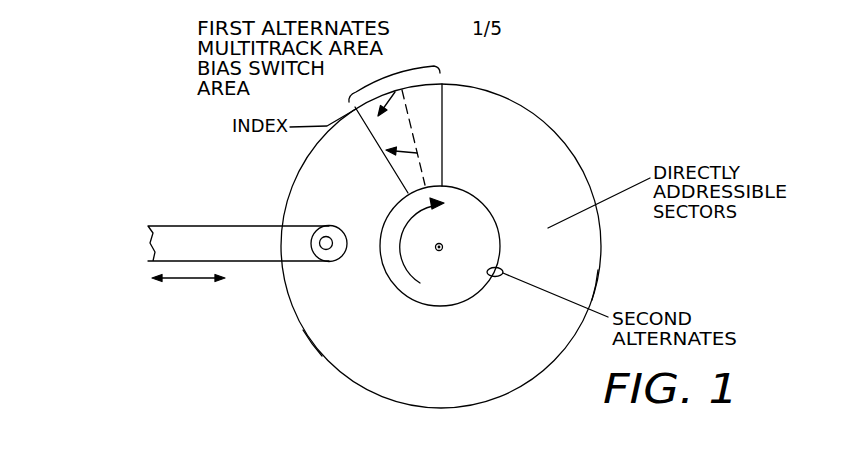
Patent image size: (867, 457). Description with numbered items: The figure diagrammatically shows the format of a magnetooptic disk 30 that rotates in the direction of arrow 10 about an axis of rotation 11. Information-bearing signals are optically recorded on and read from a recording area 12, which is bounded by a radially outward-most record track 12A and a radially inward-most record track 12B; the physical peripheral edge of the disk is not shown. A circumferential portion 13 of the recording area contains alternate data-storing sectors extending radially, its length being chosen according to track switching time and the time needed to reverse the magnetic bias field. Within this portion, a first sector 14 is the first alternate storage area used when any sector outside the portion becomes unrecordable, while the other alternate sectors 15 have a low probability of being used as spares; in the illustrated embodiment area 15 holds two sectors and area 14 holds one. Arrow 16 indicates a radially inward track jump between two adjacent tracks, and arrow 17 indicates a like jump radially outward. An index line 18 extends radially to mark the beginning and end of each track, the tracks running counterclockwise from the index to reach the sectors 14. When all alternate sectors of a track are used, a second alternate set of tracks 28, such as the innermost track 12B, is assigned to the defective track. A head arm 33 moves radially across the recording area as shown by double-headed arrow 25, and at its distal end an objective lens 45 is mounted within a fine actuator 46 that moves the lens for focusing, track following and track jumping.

The arrow 10 is at (421, 270).
The axis of rotation 11 is at (443, 245).
The recording area 12 is at (580, 262).
The radially outward-most record track 12A is at (597, 287).
The radially inward-most record track 12B is at (477, 299).
The circumferential portion 13 is at (389, 68).
The first sector 14 is at (434, 125).
The alternate sectors 15 is at (386, 139).
The arrow 16 is at (392, 104).
The arrow 17 is at (398, 155).
The index line 18 is at (403, 179).
The double-headed arrow 25 is at (208, 280).
The second alternate set of tracks 28 is at (493, 277).
The magnetooptic disk 30 is at (312, 343).
The head arm 33 is at (213, 223).
The objective lens 45 is at (330, 252).
The fine actuator 46 is at (311, 233).